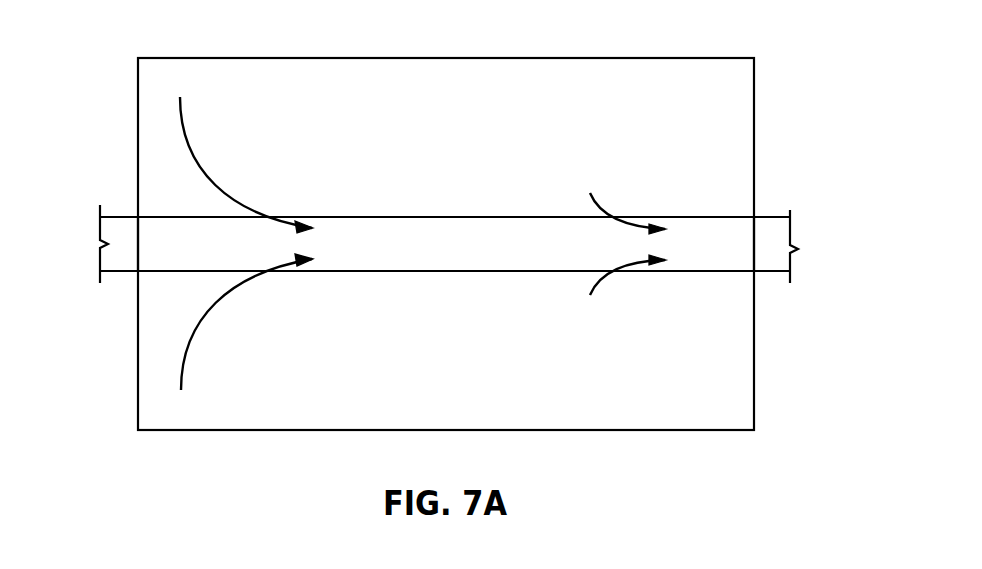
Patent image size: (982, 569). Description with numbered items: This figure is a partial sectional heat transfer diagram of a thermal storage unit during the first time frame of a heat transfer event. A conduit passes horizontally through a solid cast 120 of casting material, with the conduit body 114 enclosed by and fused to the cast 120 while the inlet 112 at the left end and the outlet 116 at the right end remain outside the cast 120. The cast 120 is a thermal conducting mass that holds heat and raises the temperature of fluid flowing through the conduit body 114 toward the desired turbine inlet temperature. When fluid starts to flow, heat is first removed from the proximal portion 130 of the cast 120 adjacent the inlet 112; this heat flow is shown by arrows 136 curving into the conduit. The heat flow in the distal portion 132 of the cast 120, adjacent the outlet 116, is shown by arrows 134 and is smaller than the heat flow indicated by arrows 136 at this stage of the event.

The inlet 112 is at (122, 273).
The conduit body 114 is at (405, 217).
The outlet 116 is at (765, 223).
The cast 120 is at (516, 68).
The proximal portion 130 is at (158, 273).
The distal portion 132 is at (740, 275).
The arrows 134 is at (606, 210).
The arrows 136 is at (222, 202).